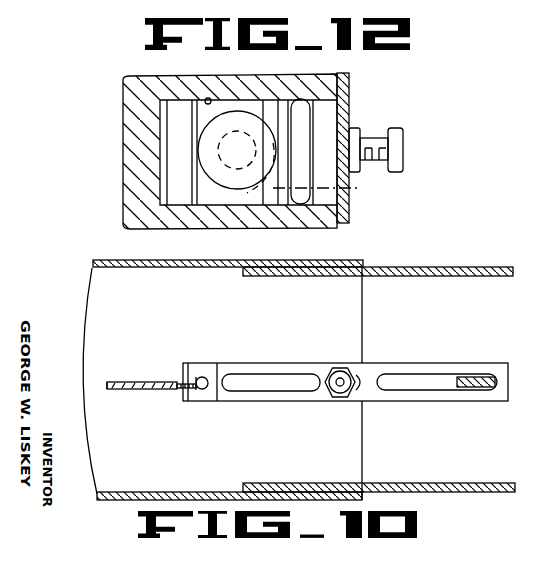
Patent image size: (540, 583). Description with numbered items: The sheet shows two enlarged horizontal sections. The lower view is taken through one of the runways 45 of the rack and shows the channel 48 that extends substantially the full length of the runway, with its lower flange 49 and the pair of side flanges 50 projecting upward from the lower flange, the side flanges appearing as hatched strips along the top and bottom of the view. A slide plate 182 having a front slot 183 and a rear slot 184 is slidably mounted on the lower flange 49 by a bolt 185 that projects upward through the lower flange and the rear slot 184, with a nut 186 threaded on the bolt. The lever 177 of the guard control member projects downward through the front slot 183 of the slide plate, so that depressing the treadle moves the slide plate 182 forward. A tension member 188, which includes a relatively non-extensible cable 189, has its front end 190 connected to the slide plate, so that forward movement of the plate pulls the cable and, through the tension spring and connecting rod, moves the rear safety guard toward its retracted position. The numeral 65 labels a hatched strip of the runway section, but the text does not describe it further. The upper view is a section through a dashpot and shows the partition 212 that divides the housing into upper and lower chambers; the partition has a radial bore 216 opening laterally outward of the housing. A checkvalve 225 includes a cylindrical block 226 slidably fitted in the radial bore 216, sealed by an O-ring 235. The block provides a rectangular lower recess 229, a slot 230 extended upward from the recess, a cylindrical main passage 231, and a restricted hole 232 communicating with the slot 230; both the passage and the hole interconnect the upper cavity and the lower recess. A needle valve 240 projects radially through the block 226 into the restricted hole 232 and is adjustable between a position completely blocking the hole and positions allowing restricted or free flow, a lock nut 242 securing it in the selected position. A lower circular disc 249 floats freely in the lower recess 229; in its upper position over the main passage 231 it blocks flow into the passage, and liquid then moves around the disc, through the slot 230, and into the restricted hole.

In FIG. 10, the runway 45 is at (343, 309).
In FIG. 10, the channel 48 is at (105, 290).
In FIG. 10, the lower flange 49 is at (147, 339).
In FIG. 10, the side flanges 50 is at (203, 267).
In FIG. 10, the flange 65 is at (310, 276).
In FIG. 10, the lever 177 is at (465, 377).
In FIG. 10, the slide plate 182 is at (368, 368).
In FIG. 10, the front slot 183 is at (432, 390).
In FIG. 10, the rear slot 184 is at (263, 391).
In FIG. 10, the bolt 185 is at (343, 373).
In FIG. 10, the nut 186 is at (340, 398).
In FIG. 10, the tension member 188 is at (158, 382).
In FIG. 10, the cable 189 is at (112, 390).
In FIG. 10, the front end 190 is at (180, 391).
In FIG. 12, the partition 212 is at (147, 95).
In FIG. 12, the radial bore 216 is at (160, 169).
In FIG. 12, the checkvalve 225 is at (336, 103).
In FIG. 12, the cylindrical block 226 is at (178, 140).
In FIG. 12, the lower recess 229 is at (217, 98).
In FIG. 12, the slot 230 is at (337, 187).
In FIG. 12, the main passage 231 is at (239, 130).
In FIG. 12, the restricted hole 232 is at (246, 189).
In FIG. 12, the O-ring 235 is at (302, 107).
In FIG. 12, the needle valve 240 is at (370, 140).
In FIG. 12, the lock nut 242 is at (352, 137).
In FIG. 12, the lower circular disc 249 is at (218, 122).